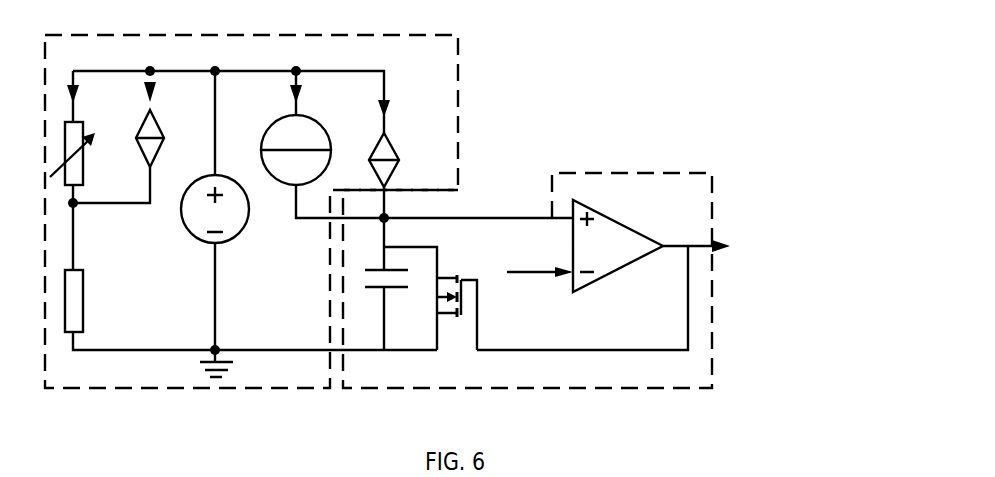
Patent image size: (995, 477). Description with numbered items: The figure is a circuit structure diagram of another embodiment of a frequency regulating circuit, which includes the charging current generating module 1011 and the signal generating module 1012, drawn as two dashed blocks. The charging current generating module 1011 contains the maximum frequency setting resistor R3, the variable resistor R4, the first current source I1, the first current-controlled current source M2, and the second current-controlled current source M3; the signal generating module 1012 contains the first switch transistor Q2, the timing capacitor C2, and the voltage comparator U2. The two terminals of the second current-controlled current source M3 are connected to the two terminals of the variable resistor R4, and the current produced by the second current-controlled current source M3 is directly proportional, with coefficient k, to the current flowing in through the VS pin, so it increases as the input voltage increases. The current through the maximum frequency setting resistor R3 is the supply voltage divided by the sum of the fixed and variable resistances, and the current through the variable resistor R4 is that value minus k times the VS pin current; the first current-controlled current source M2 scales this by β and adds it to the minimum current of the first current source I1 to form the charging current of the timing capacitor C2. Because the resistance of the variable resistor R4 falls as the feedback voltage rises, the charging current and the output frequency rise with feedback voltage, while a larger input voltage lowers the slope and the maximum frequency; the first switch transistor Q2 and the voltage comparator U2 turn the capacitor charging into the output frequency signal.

The charging current generating module 1011 is at (317, 195).
The signal generating module 1012 is at (601, 265).
The second current-controlled current source M3 is at (251, 195).
The first current-controlled current source M2 is at (527, 272).
The variable resistor R4 is at (87, 153).
The maximum frequency setting resistor R3 is at (45, 301).
The first current source I1 is at (302, 140).
The timing capacitor C2 is at (373, 295).
The first switch transistor Q2 is at (458, 293).
The voltage comparator U2 is at (618, 238).